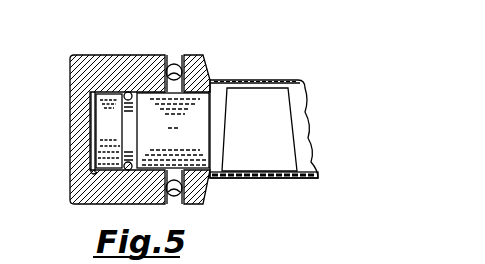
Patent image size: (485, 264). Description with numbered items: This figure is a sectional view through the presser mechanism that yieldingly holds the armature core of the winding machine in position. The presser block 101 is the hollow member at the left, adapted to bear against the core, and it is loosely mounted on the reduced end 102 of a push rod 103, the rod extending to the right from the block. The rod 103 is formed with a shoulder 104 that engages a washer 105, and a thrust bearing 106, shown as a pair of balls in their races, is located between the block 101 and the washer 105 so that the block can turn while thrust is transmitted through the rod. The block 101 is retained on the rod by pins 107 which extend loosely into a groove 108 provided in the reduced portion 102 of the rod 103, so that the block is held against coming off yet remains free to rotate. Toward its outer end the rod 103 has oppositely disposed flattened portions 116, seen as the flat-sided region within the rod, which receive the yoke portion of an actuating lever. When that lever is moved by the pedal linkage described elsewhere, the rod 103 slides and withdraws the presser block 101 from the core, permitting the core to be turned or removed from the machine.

The presser block 101 is at (92, 62).
The reduced end 102 is at (110, 126).
The push rod 103 is at (300, 105).
The shoulder 104 is at (213, 90).
The washer 105 is at (192, 62).
The thrust bearing 106 is at (170, 66).
The pins 107 is at (125, 93).
The groove 108 is at (133, 126).
The flattened portions 116 is at (260, 100).